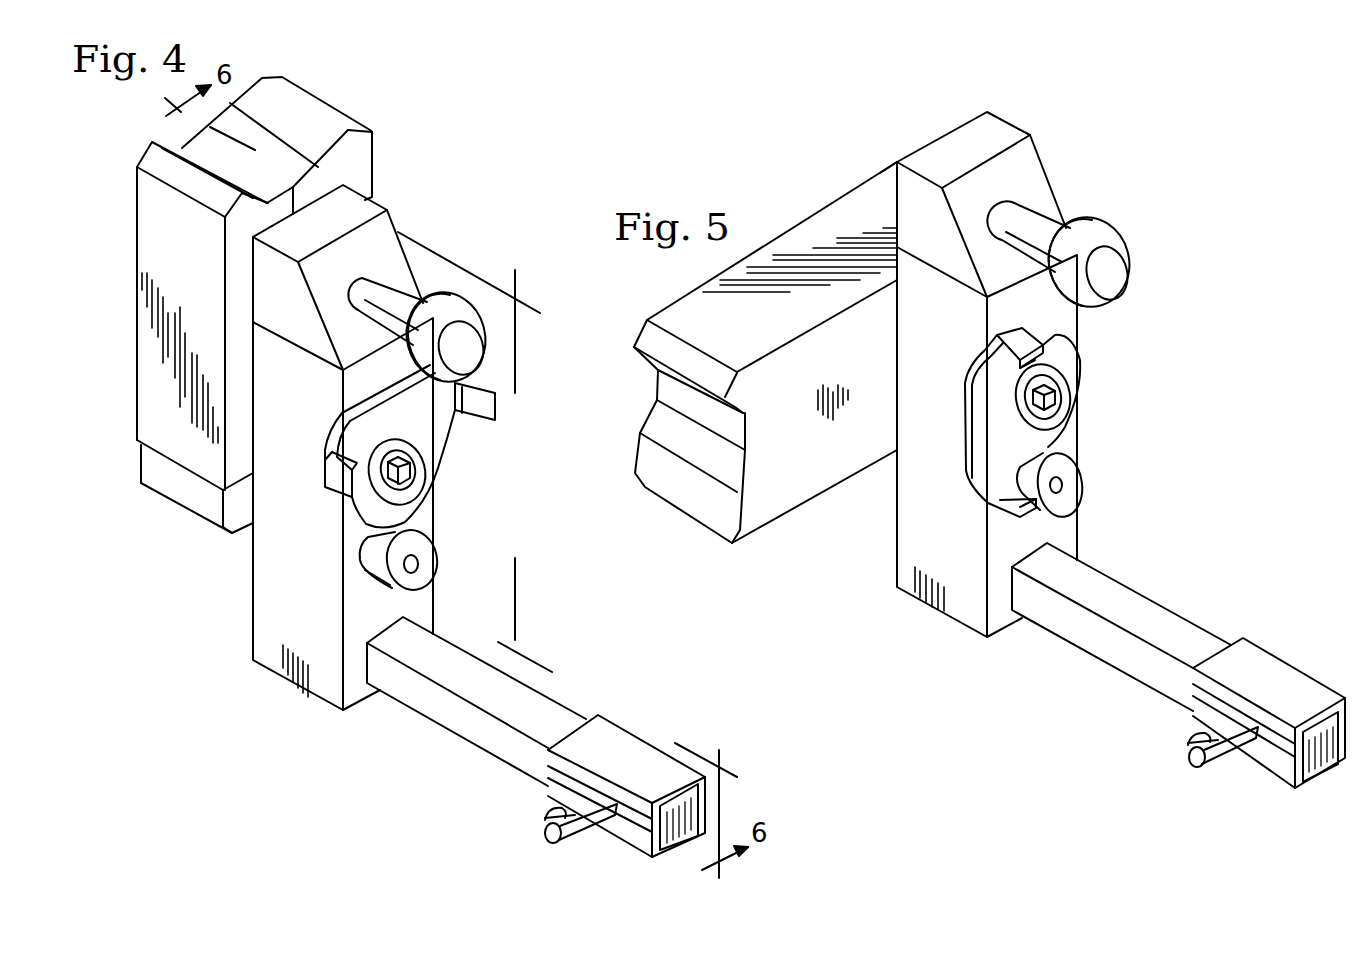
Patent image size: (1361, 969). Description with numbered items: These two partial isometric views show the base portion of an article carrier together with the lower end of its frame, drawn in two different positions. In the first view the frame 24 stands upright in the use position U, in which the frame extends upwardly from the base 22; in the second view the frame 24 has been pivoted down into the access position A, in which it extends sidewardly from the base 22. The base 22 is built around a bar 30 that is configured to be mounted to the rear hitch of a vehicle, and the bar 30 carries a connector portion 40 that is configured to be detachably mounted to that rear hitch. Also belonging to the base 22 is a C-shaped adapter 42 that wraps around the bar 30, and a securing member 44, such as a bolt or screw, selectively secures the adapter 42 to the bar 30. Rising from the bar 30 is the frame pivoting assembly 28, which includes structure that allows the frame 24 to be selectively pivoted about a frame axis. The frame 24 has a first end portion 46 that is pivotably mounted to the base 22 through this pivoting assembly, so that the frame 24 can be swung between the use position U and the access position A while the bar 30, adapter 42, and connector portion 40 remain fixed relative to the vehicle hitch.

In FIG. 4, the base 22 is at (377, 235).
In FIG. 5, the base 22 is at (1023, 175).
In FIG. 4, the frame 24 is at (147, 370).
In FIG. 5, the frame 24 is at (780, 503).
In FIG. 4, the frame pivoting assembly 28 is at (263, 618).
In FIG. 5, the frame pivoting assembly 28 is at (910, 543).
In FIG. 4, the bar 30 is at (458, 715).
In FIG. 5, the bar 30 is at (1098, 643).
In FIG. 5, the connector portion 40 is at (1210, 705).
In FIG. 4, the adapter 42 is at (625, 740).
In FIG. 5, the adapter 42 is at (1273, 670).
In FIG. 4, the securing member 44 is at (572, 842).
In FIG. 5, the securing member 44 is at (1215, 758).
In FIG. 4, the first end portion 46 is at (147, 463).
In FIG. 5, the first end portion 46 is at (858, 210).
In FIG. 4, the use position U is at (147, 238).
In FIG. 5, the access position A is at (813, 237).